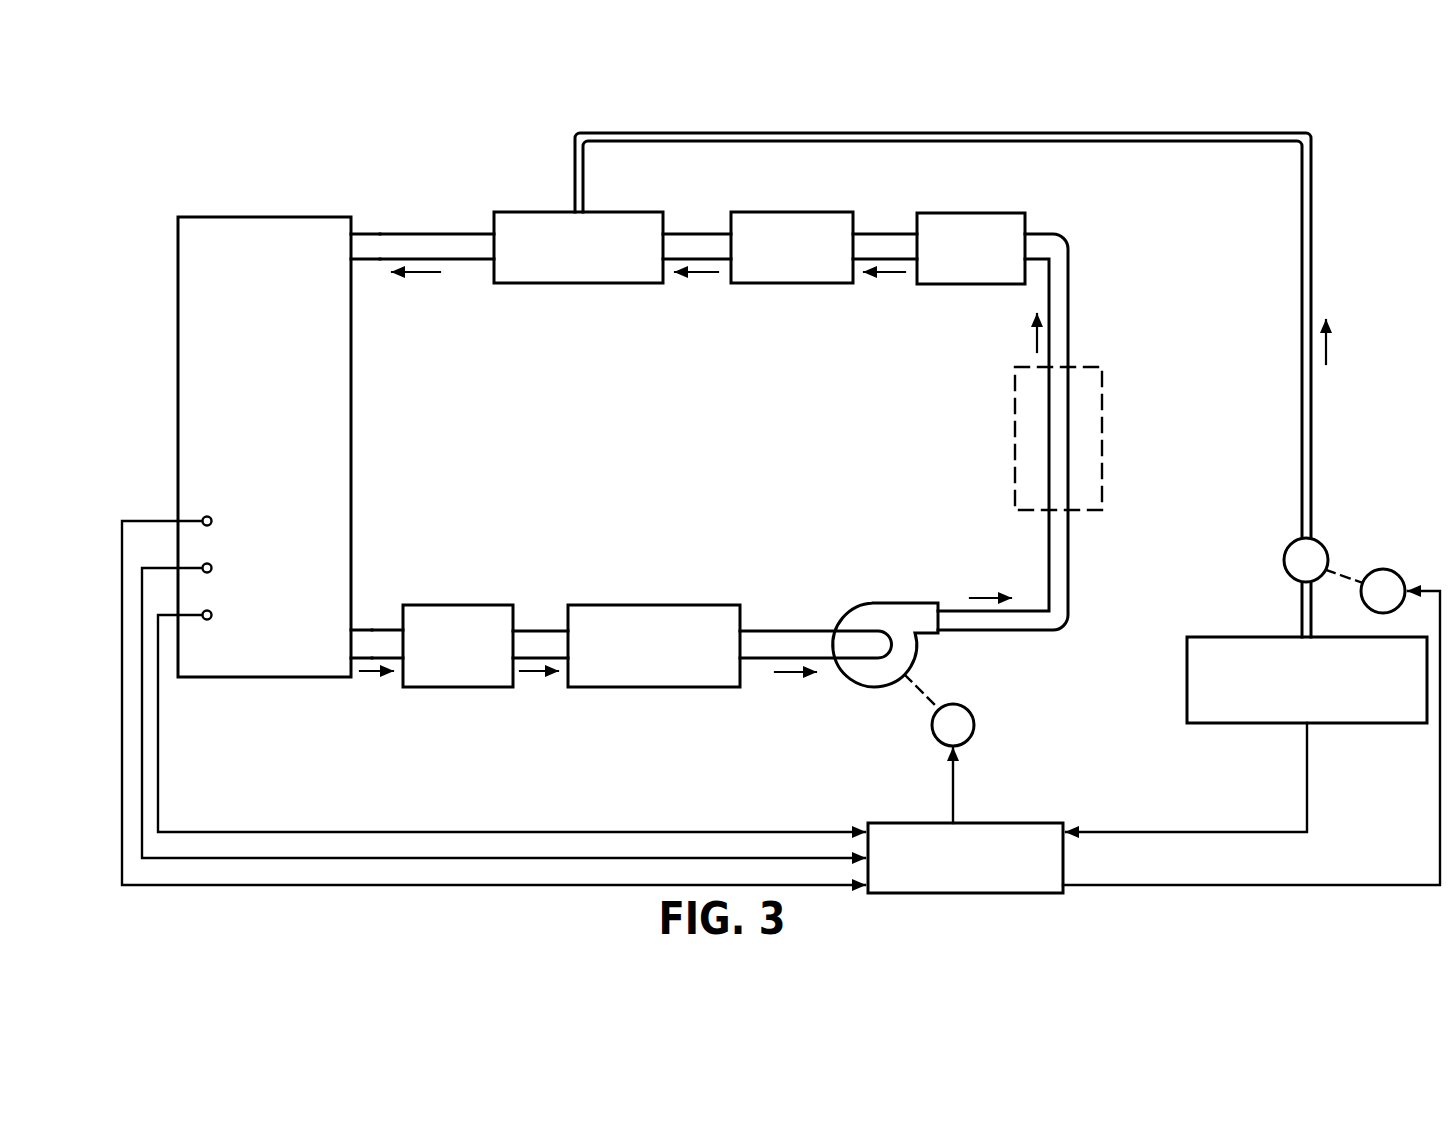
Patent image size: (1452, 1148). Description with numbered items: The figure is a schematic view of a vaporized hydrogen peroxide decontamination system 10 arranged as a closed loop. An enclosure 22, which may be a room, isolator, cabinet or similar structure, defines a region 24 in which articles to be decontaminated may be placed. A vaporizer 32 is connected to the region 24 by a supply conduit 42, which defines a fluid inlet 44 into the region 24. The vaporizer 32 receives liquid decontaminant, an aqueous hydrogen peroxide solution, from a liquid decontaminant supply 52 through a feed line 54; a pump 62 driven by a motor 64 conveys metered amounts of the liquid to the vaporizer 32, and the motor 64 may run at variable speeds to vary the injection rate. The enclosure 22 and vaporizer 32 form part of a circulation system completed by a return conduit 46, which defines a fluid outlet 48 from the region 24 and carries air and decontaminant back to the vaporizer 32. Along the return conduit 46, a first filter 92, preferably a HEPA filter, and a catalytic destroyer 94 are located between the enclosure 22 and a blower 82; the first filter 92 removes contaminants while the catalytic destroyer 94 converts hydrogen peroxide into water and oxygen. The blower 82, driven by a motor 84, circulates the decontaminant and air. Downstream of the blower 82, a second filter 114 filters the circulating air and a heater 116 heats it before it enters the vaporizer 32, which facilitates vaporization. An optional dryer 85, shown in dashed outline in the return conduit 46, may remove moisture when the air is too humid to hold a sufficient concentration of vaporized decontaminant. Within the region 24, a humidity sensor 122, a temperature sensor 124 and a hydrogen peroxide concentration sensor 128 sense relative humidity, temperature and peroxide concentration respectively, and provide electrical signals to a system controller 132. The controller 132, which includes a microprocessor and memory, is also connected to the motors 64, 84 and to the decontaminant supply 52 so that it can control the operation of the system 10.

The vaporized hydrogen peroxide decontamination system 10 is at (1370, 143).
The enclosure 22 is at (243, 217).
The region 24 is at (328, 430).
The vaporizer 32 is at (578, 284).
The supply conduit 42 is at (412, 234).
The fluid inlet 44 is at (351, 247).
The return conduit 46 is at (694, 234).
The fluid outlet 48 is at (351, 648).
The liquid decontaminant supply 52 is at (1227, 637).
The feed line 54 is at (1312, 245).
The pump 62 is at (1290, 543).
The motor 64 is at (1386, 569).
The blower 82 is at (887, 603).
The motor 84 is at (975, 712).
The optional dryer 85 is at (1015, 425).
The first filter 92 is at (452, 688).
The catalytic destroyer 94 is at (660, 688).
The second filter 114 is at (965, 212).
The heater 116 is at (803, 212).
The humidity sensor 122 is at (203, 517).
The temperature sensor 124 is at (213, 567).
The hydrogen peroxide concentration sensor 128 is at (208, 620).
The system controller 132 is at (1000, 823).